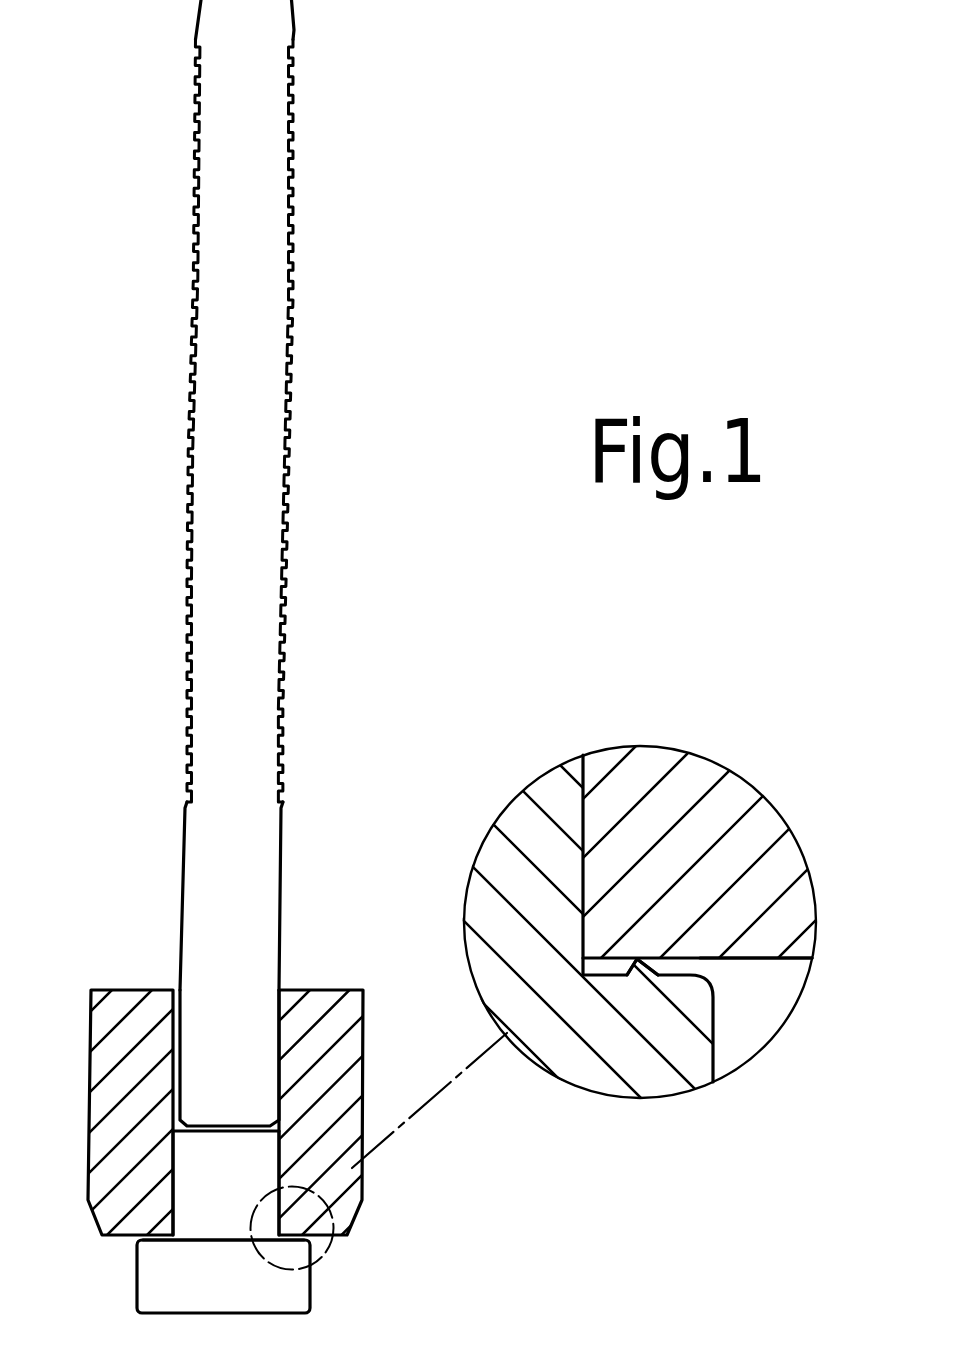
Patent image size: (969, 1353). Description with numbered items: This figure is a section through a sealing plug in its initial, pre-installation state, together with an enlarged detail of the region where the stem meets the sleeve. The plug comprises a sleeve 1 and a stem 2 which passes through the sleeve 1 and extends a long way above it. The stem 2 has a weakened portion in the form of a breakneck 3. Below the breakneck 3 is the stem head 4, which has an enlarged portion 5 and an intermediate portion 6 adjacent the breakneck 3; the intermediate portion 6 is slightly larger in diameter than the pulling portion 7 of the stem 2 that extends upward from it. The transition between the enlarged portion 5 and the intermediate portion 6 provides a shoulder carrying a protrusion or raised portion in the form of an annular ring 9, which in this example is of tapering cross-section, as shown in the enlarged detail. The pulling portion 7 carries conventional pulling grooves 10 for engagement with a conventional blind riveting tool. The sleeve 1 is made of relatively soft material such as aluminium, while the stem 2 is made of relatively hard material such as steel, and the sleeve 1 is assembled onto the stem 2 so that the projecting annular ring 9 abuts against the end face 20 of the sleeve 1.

The sleeve 1 is at (122, 1114).
The stem 2 is at (217, 787).
The breakneck 3 is at (207, 1120).
The stem head 4 is at (213, 1225).
The enlarged portion 5 is at (257, 1287).
The intermediate portion 6 is at (203, 1177).
The pulling portion 7 is at (217, 889).
The annular ring 9 is at (627, 957).
The pulling grooves 10 is at (188, 572).
The end face 20 is at (762, 958).